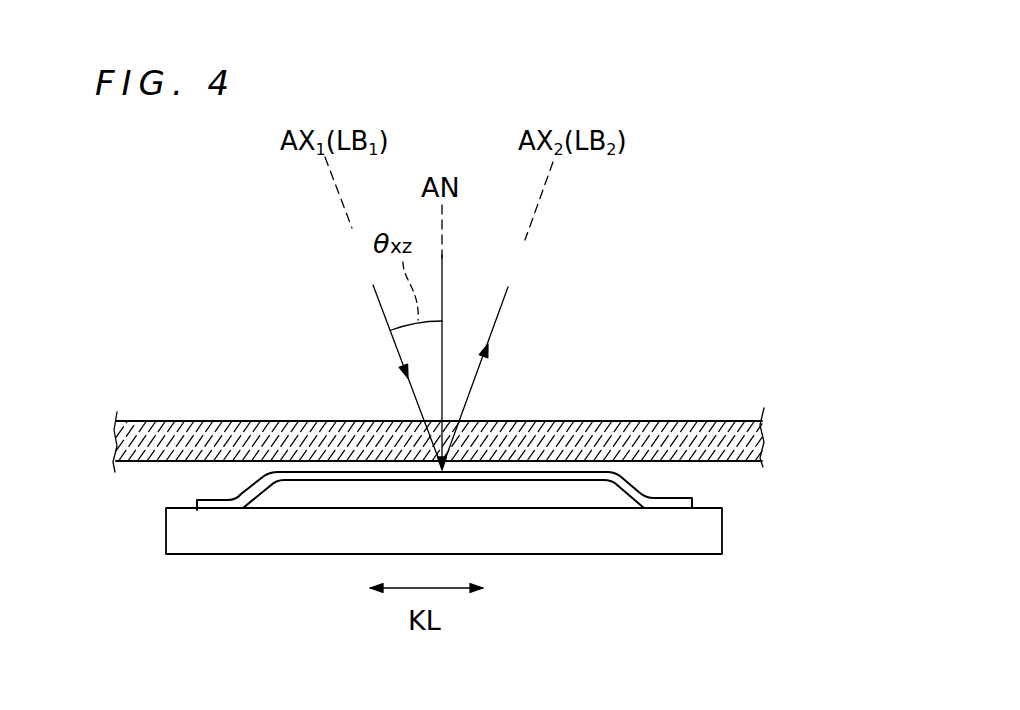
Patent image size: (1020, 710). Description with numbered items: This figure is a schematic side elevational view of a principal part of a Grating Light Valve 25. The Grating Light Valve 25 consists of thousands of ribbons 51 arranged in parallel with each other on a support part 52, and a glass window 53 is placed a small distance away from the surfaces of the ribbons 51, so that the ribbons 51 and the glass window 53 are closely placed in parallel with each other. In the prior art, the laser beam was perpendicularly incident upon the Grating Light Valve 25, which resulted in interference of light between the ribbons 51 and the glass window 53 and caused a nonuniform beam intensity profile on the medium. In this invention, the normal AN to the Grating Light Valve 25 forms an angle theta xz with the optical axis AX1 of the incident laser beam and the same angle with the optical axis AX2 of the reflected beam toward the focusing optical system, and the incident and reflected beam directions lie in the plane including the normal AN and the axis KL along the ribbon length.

The Grating Light Valve 25 is at (572, 385).
The ribbons 51 is at (645, 484).
The support part 52 is at (712, 523).
The glass window 53 is at (695, 427).